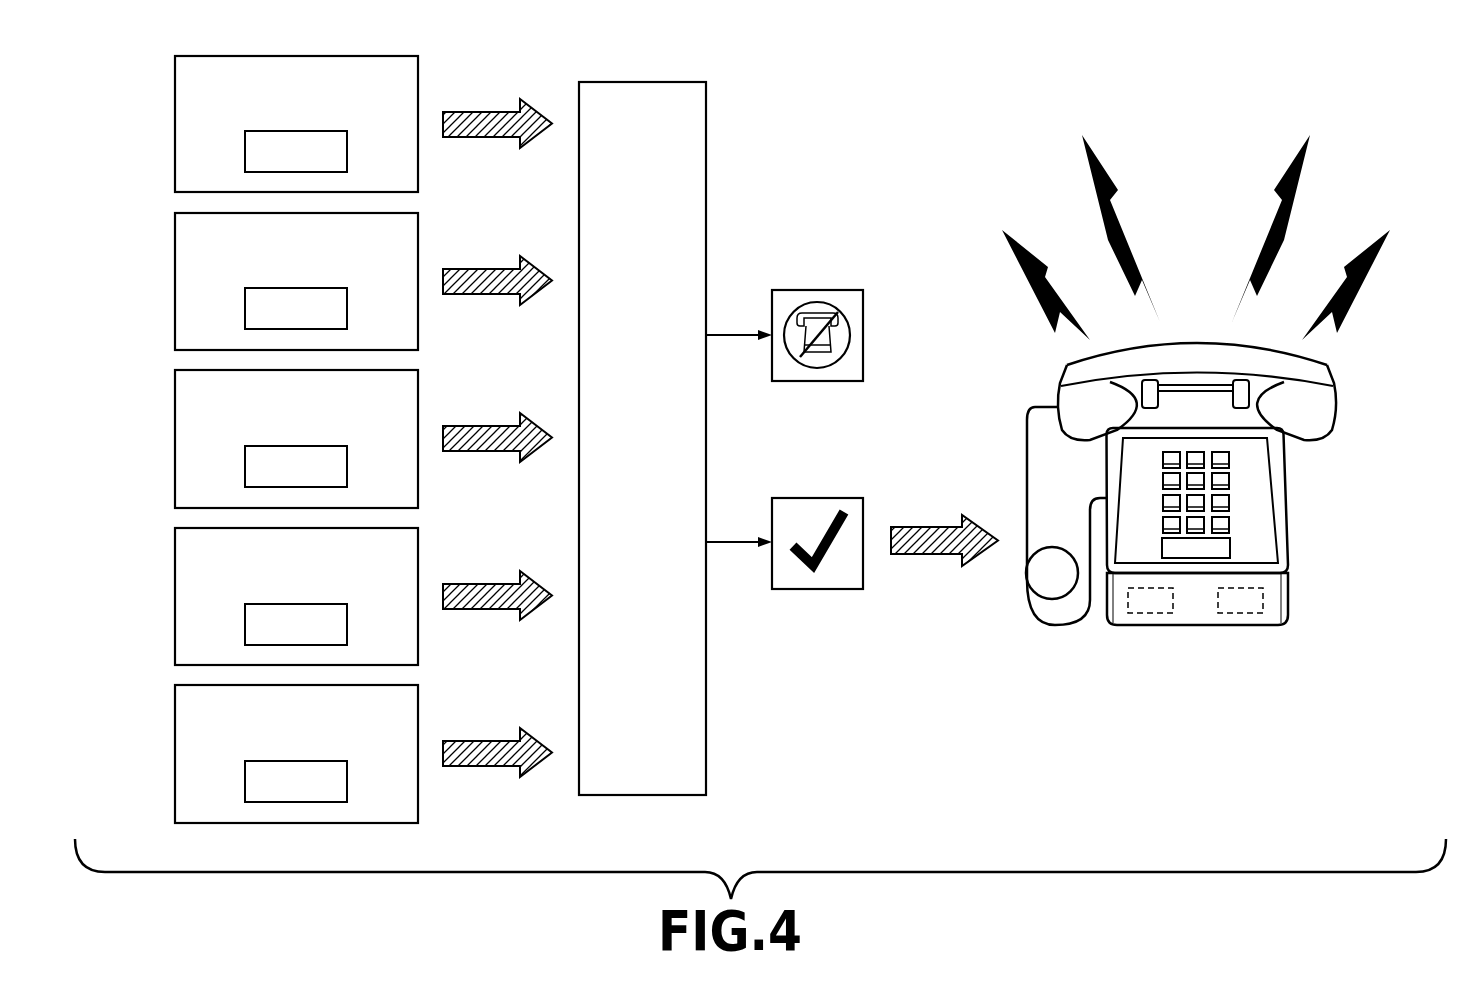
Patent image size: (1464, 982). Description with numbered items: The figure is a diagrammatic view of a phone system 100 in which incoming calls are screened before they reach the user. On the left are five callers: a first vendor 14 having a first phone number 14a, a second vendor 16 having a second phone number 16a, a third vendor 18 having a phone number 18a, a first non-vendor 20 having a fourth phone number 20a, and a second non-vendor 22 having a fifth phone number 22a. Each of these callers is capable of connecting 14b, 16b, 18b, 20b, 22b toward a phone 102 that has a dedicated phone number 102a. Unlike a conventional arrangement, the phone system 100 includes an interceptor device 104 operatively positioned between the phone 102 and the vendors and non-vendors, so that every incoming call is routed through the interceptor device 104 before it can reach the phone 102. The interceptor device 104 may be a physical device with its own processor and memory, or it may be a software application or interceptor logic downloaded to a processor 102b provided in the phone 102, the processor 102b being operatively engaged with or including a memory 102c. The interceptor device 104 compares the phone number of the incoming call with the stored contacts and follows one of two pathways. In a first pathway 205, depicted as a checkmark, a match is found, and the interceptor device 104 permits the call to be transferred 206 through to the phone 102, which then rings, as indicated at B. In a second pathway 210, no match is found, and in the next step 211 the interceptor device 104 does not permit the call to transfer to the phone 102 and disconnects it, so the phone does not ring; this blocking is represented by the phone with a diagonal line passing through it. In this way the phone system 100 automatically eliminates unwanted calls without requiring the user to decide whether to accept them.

The first vendor 14 is at (168, 739).
The first phone number 14a is at (263, 783).
The connecting 14b is at (477, 741).
The second vendor 16 is at (168, 582).
The second phone number 16a is at (263, 626).
The connecting 16b is at (477, 584).
The third vendor 18 is at (168, 424).
The phone number 18a is at (263, 468).
The connecting 18b is at (477, 426).
The first non-vendor 20 is at (168, 266).
The fourth phone number 20a is at (263, 310).
The connecting 20b is at (477, 269).
The second non-vendor 22 is at (168, 109).
The fifth phone number 22a is at (263, 153).
The connecting 22b is at (477, 112).
The interceptor device 104 is at (622, 455).
The second pathway 210 is at (817, 301).
The blocking step 211 is at (820, 290).
The first pathway 205 is at (820, 498).
The transfer 206 is at (918, 527).
The phone 102 is at (1295, 500).
The dedicated phone number 102a is at (1218, 548).
The processor 102b is at (1148, 604).
The memory 102c is at (1245, 604).
The ring B is at (1364, 309).
The phone system 100 is at (1032, 751).